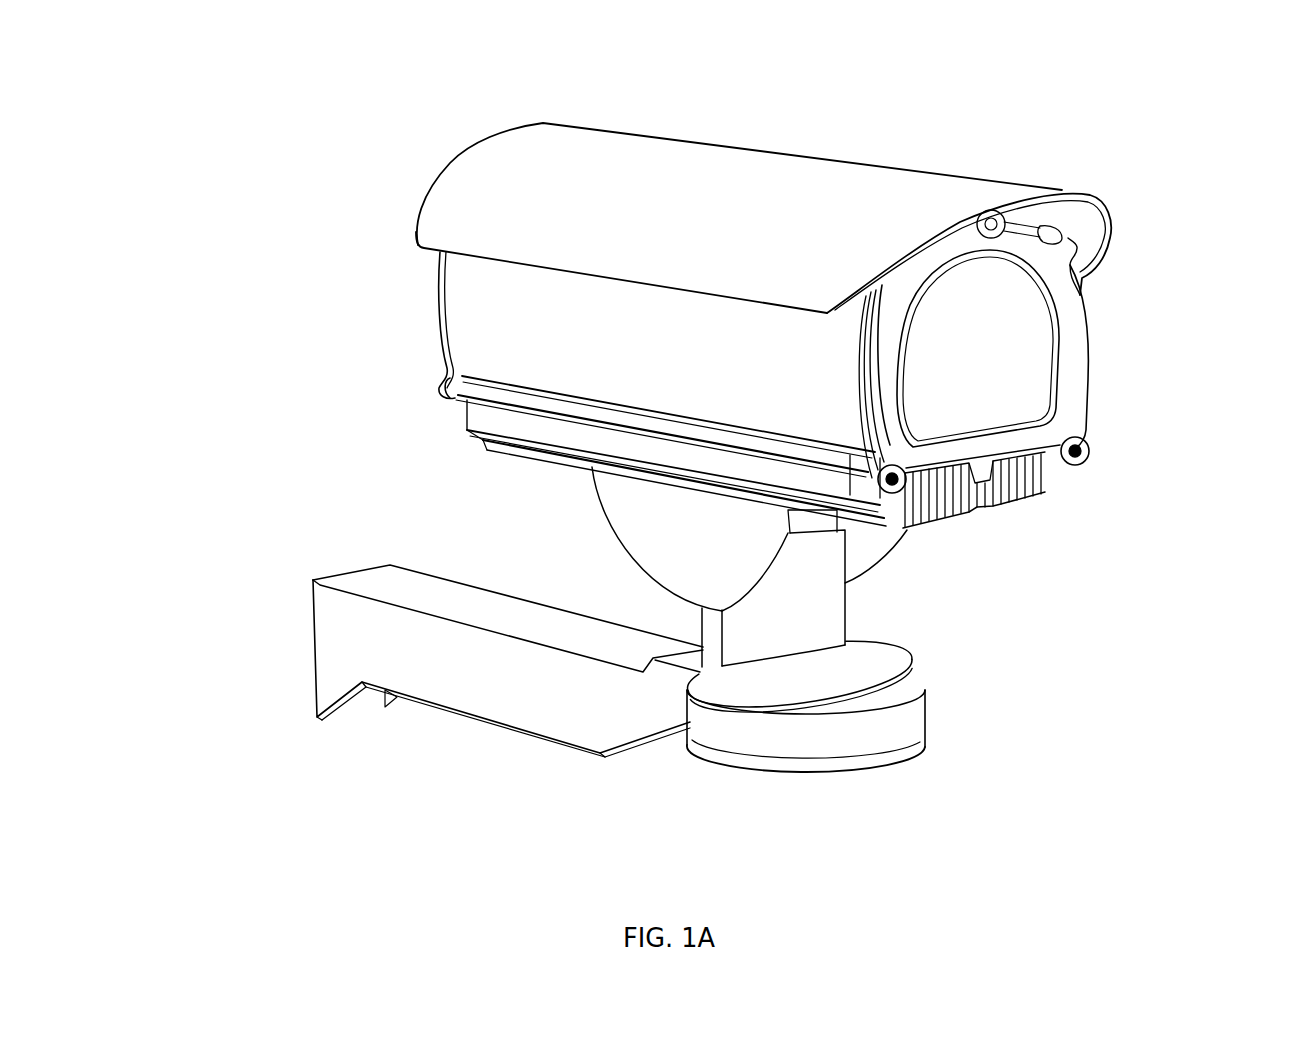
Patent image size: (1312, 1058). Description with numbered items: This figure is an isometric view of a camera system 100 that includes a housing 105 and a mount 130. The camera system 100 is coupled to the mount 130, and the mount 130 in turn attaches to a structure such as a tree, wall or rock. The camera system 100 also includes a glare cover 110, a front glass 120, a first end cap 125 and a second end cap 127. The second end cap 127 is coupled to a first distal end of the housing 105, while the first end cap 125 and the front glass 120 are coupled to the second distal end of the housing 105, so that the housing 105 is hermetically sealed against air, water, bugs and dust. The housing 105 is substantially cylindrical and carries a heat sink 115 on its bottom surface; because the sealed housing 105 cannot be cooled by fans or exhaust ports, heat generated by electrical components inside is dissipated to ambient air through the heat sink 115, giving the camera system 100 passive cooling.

The camera system 100 is at (360, 94).
The housing 105 is at (462, 290).
The glare cover 110 is at (582, 140).
The heat sink 115 is at (488, 422).
The front glass 120 is at (988, 340).
The first end cap 125 is at (1073, 314).
The second end cap 127 is at (437, 328).
The mount 130 is at (230, 563).